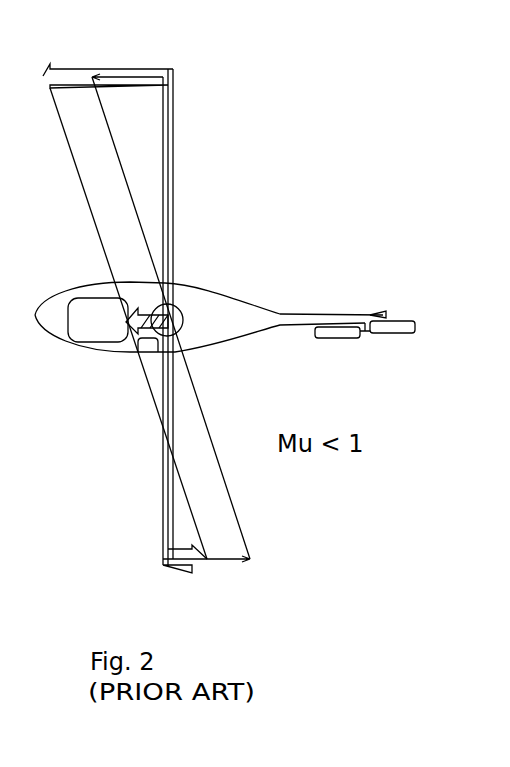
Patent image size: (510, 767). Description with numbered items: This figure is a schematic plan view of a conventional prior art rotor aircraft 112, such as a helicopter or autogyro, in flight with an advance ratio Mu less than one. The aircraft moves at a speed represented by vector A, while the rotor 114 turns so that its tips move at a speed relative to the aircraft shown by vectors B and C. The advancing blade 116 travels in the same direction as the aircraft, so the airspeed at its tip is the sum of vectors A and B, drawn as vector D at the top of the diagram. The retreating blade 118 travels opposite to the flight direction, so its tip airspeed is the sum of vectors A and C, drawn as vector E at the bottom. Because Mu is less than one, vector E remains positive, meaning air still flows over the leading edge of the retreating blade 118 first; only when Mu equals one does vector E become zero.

The rotor aircraft 112 is at (215, 308).
The rotor 114 is at (172, 198).
The advancing blade 116 is at (173, 105).
The retreating blade 118 is at (167, 517).